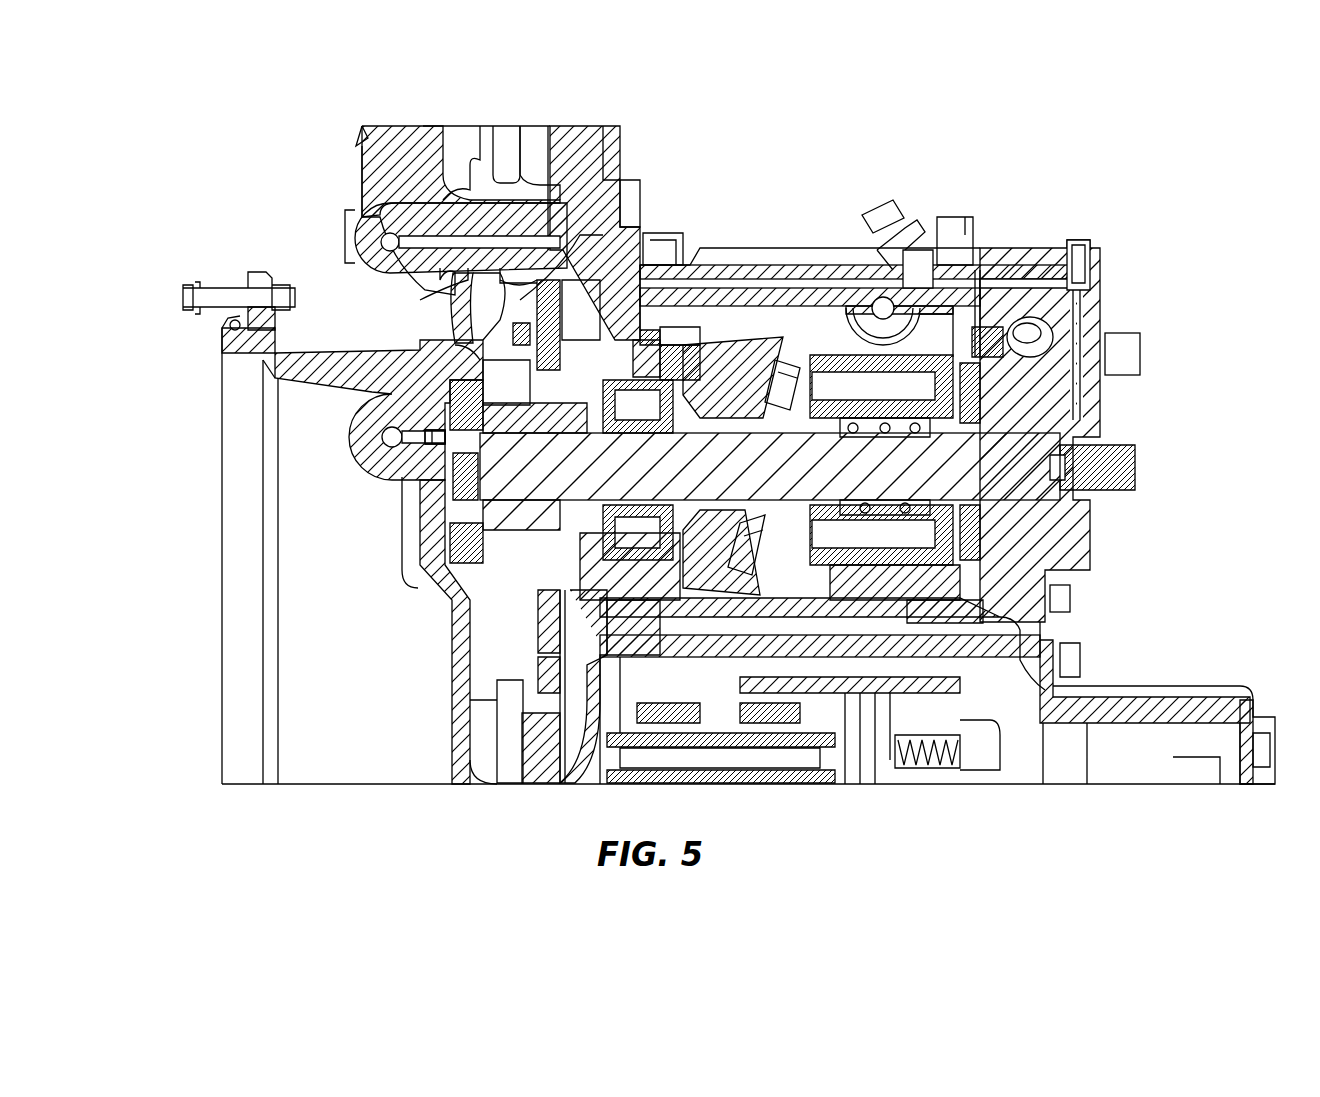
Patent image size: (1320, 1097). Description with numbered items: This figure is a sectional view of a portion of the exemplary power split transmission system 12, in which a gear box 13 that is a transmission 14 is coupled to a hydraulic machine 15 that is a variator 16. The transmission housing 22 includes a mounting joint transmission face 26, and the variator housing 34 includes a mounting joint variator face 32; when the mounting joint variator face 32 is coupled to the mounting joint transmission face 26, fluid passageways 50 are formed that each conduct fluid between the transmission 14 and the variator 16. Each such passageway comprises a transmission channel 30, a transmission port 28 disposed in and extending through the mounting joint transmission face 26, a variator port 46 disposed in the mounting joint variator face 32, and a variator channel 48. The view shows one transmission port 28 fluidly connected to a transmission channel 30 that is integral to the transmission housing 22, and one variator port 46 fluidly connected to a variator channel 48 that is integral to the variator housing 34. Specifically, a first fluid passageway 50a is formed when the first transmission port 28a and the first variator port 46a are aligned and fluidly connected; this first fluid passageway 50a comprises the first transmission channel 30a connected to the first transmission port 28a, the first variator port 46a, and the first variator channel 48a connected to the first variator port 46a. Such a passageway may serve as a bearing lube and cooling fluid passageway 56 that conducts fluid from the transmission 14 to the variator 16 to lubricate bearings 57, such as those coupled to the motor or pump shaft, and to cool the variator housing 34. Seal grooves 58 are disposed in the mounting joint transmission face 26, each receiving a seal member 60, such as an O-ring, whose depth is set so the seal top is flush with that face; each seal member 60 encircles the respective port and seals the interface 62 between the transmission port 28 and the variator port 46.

The power split transmission system 12 is at (257, 212).
The gear box 13 is at (471, 242).
The transmission 14 is at (430, 118).
The hydraulic machine 15 is at (810, 225).
The variator 16 is at (782, 265).
The transmission housing 22 is at (570, 122).
The mounting joint transmission face 26 is at (660, 240).
The transmission port 28 is at (673, 161).
The first transmission port 28a is at (625, 250).
The transmission channel 30 is at (625, 220).
The first transmission channel 30a is at (612, 262).
The mounting joint variator face 32 is at (380, 343).
The variator housing 34 is at (788, 265).
The variator port 46 is at (810, 230).
The first variator port 46a is at (748, 262).
The variator channel 48 is at (1038, 398).
The first variator channel 48a is at (950, 280).
The fluid passageway 50 is at (781, 170).
The first fluid passageway 50a is at (487, 150).
The bearing lube and cooling fluid passageway 56 is at (430, 210).
The bearing 57 is at (1070, 417).
The seal groove 58 is at (548, 160).
The seal member 60 is at (565, 250).
The interface 62 is at (425, 447).